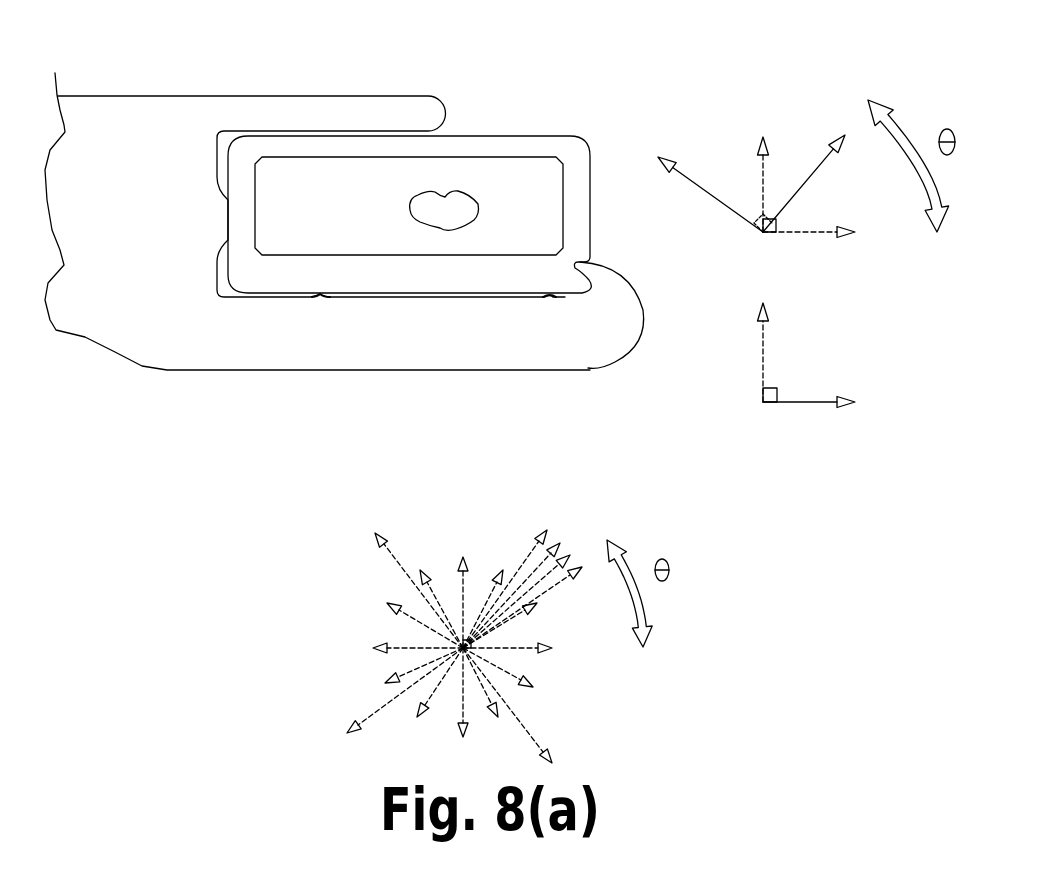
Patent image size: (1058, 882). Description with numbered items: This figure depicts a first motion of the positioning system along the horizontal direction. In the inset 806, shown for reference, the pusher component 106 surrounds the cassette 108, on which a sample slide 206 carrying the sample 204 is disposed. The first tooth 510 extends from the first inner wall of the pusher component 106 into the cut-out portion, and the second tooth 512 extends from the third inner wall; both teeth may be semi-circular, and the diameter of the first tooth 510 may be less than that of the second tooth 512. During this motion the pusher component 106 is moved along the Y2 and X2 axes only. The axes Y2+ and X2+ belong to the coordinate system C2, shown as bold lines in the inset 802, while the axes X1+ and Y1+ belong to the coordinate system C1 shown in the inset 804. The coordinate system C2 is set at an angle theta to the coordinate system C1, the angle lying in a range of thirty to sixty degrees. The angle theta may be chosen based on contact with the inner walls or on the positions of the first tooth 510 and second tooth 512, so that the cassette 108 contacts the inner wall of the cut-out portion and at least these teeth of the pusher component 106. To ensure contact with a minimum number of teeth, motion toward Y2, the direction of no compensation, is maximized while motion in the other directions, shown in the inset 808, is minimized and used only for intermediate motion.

The pusher component 106 is at (355, 342).
The cassette 108 is at (488, 147).
The sample 204 is at (445, 205).
The sample slide 206 is at (370, 238).
The first tooth 510 is at (320, 294).
The second tooth 512 is at (229, 214).
The inset showing coordinate system C2 802 is at (757, 67).
The inset showing coordinate system C1 804 is at (830, 442).
The inset showing cassette contacting teeth 806 is at (365, 49).
The inset showing other directions 808 is at (484, 494).